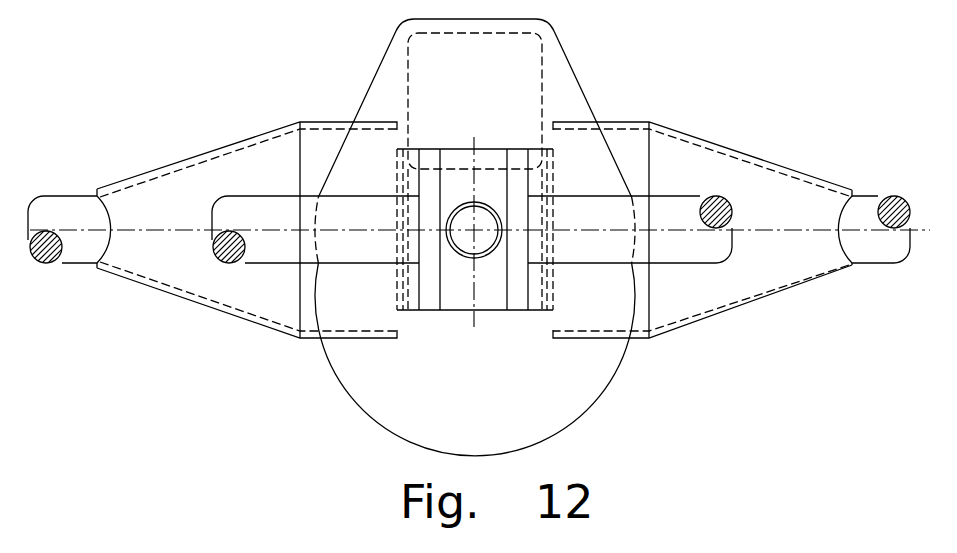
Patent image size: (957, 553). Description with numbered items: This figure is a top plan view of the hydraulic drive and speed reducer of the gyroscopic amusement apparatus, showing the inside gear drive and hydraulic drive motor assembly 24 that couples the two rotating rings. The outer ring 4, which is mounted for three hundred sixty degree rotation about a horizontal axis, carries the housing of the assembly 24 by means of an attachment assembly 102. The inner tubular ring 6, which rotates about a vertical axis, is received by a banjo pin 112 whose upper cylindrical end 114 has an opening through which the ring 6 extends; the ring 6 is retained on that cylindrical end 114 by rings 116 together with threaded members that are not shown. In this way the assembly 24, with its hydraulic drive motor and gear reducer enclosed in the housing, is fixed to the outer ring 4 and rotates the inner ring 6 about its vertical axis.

The outer ring 4 is at (862, 208).
The inner tubular ring 6 is at (637, 218).
The attachment assembly 102 is at (738, 177).
The inside gear drive and hydraulic drive motor assembly 24 is at (600, 353).
The banjo pin 112 is at (473, 243).
The upper cylindrical end 114 is at (482, 168).
The rings 116 is at (432, 230).